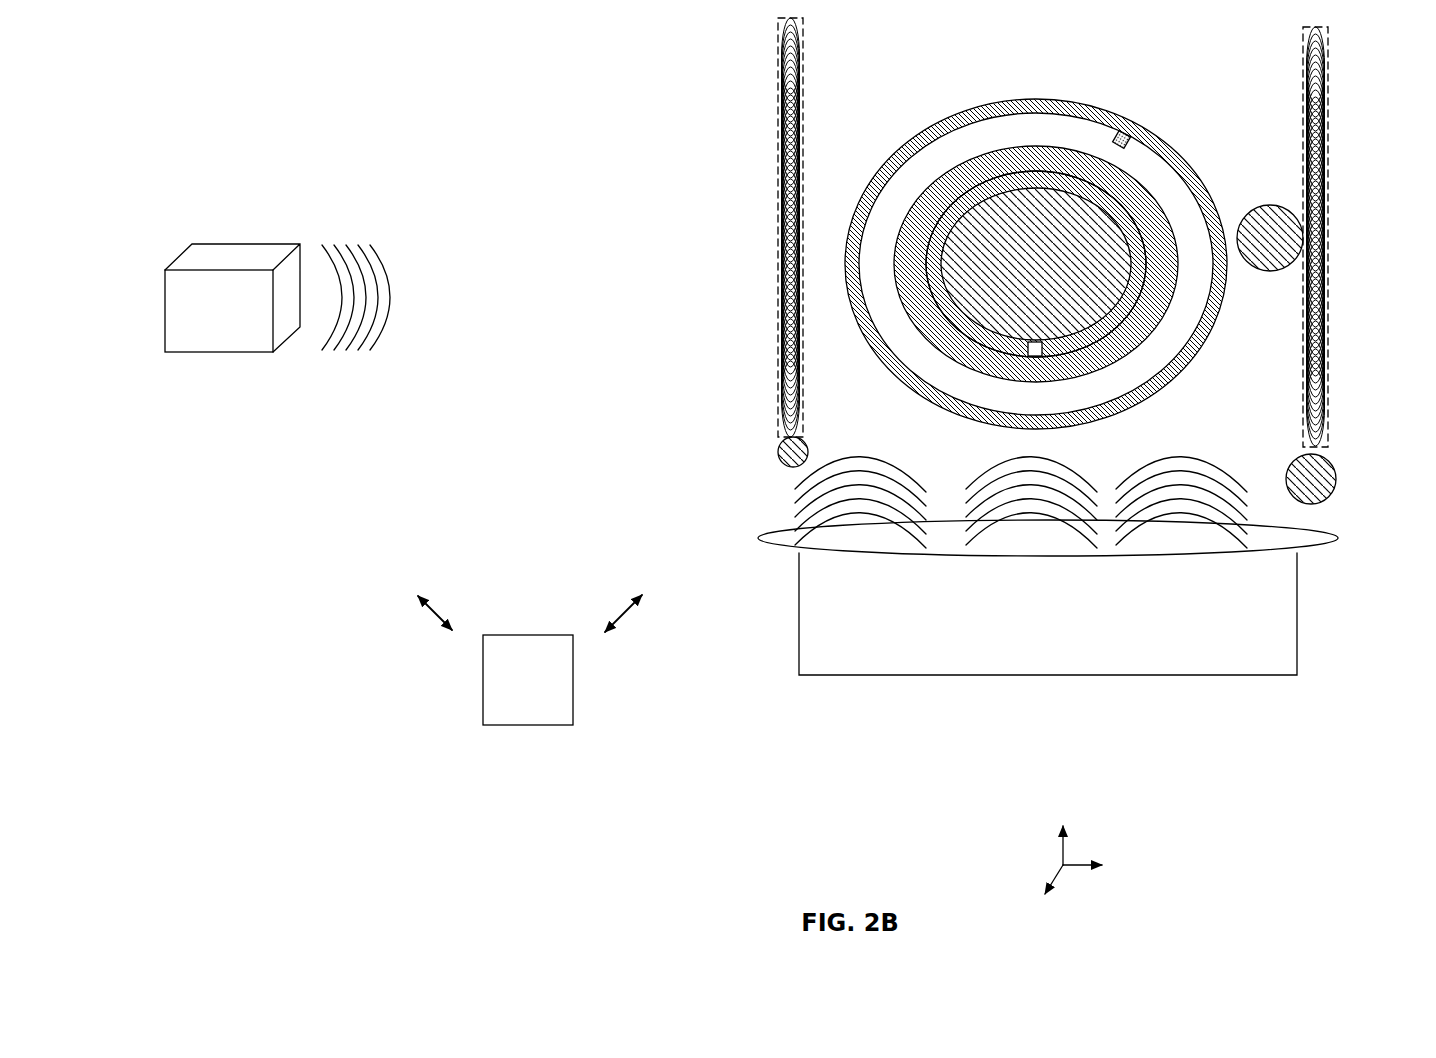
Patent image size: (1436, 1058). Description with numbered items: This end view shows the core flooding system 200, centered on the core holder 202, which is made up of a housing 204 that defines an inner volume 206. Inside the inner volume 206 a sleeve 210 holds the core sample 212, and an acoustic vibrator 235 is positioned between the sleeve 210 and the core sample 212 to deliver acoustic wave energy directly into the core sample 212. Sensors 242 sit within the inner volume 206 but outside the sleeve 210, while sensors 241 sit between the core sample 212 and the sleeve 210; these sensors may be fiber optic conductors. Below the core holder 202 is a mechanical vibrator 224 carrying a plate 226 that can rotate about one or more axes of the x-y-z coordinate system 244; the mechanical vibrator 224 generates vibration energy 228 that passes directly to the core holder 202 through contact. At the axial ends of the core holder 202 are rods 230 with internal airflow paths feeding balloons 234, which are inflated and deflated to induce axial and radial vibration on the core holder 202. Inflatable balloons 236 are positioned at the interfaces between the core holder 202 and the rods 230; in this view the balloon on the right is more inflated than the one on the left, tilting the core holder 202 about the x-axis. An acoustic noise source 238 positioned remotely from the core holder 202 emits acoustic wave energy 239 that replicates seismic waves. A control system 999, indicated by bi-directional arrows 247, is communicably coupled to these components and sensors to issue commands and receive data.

The core flooding system 200 is at (350, 60).
The core holder 202 is at (1056, 86).
The housing 204 is at (982, 112).
The inner volume 206 is at (967, 382).
The sleeve 210 is at (918, 222).
The core sample 212 is at (955, 250).
The mechanical vibrator 224 is at (928, 681).
The plate 226 is at (776, 545).
The vibration energy 228 is at (780, 505).
The rods 230 is at (786, 122).
The balloons 234 is at (1270, 272).
The acoustic vibrator 235 is at (1133, 303).
The inflatable balloons 236 is at (778, 450).
The acoustic noise source 238 is at (218, 352).
The acoustic wave energy 239 is at (350, 360).
The sensors 241 is at (1048, 348).
The sensors 242 is at (1124, 134).
The x-y-z coordinate system 244 is at (1103, 832).
The bi-directional arrows 247 is at (438, 617).
The control system 999 is at (528, 680).